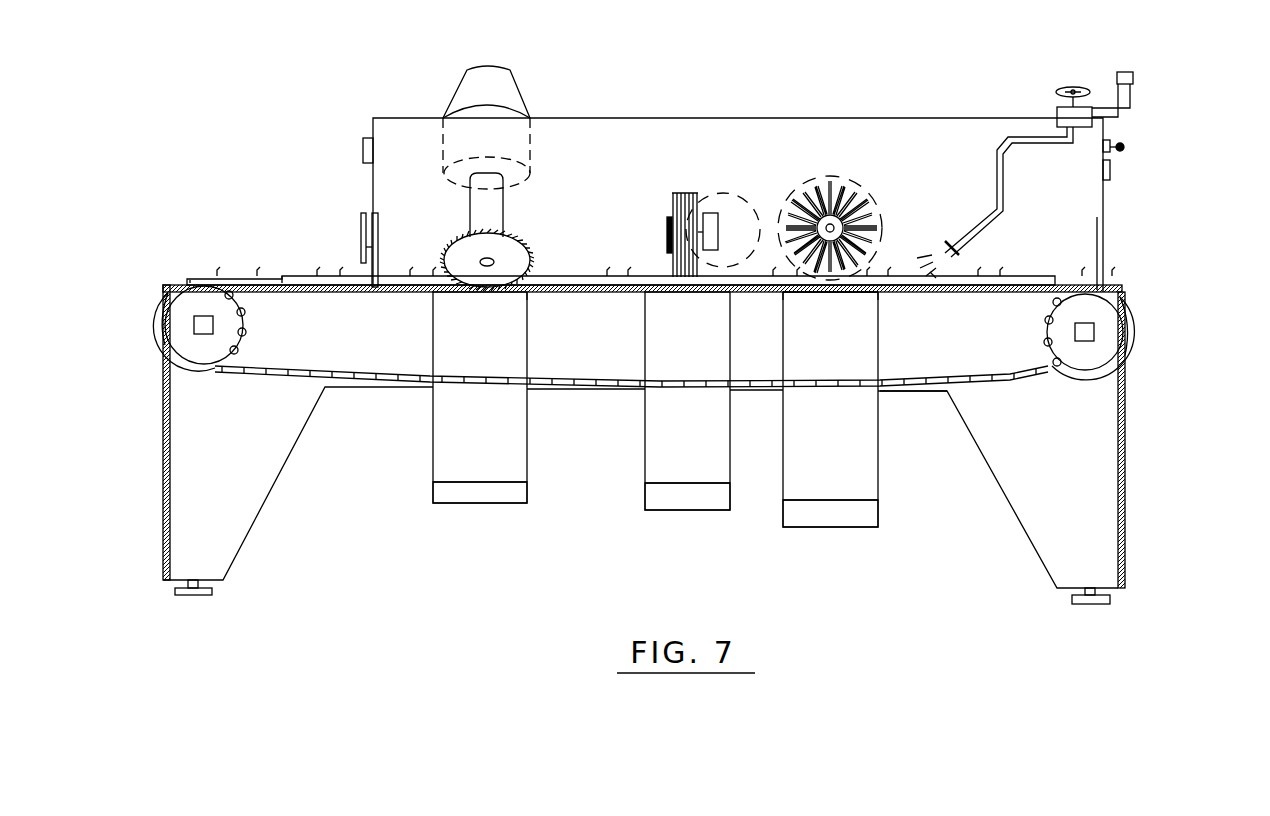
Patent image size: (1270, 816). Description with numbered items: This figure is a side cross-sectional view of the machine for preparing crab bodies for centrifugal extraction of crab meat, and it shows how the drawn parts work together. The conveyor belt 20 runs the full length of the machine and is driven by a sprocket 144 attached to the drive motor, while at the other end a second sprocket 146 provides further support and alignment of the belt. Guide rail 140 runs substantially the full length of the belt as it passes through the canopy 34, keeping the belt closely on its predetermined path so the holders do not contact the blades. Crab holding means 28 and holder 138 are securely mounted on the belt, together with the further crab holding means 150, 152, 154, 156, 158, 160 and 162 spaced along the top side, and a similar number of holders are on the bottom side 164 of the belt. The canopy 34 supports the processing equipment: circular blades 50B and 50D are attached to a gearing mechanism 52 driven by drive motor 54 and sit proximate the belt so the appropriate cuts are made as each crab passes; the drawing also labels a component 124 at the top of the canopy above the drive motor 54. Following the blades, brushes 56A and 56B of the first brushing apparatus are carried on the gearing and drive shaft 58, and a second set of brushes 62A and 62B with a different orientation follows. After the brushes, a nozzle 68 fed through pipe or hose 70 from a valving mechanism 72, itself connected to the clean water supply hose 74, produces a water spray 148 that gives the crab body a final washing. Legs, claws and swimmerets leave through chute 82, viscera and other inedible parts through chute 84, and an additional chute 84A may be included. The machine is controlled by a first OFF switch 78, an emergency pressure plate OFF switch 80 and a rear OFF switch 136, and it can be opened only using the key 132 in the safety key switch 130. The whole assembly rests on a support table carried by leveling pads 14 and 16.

The leveling pad 14 is at (1080, 605).
The leveling pad 16 is at (200, 595).
The conveyor belt 20 is at (342, 370).
The crab holding means 28 is at (253, 270).
The canopy 34 is at (618, 120).
The circular blade 50B is at (520, 243).
The circular blade 50D is at (517, 264).
The gearing mechanism 52 is at (490, 203).
The drive motor 54 is at (497, 110).
The brush 56A is at (670, 185).
The brush 56B is at (669, 235).
The gearing and drive shaft 58 is at (720, 225).
The brush 62A is at (843, 197).
The brush 62B is at (830, 228).
The nozzle 68 is at (943, 257).
The pipe or hose 70 is at (1002, 182).
The valving mechanism 72 is at (1053, 118).
The hose 74 is at (1133, 102).
The OFF switch 78 is at (362, 155).
The emergency pressure plate OFF switch 80 is at (360, 228).
The chute 82 is at (472, 493).
The chute 84 is at (665, 500).
The chute 84A is at (817, 513).
The hopper 124 is at (472, 90).
The safety key switch 130 is at (1113, 147).
The key 132 is at (1120, 148).
The OFF switch 136 is at (1113, 172).
The holder 138 is at (1113, 293).
The guide rail 140 is at (842, 283).
The sprocket 144 is at (235, 323).
The second sprocket 146 is at (1055, 327).
The water spray 148 is at (937, 270).
The crab holding means 150 is at (338, 270).
The crab holding means 152 is at (447, 287).
The crab holding means 154 is at (537, 278).
The crab holding means 156 is at (633, 277).
The crab holding means 158 is at (793, 277).
The crab holding means 160 is at (890, 277).
The crab holding means 162 is at (1000, 278).
The bottom side of conveyor belt 164 is at (928, 378).